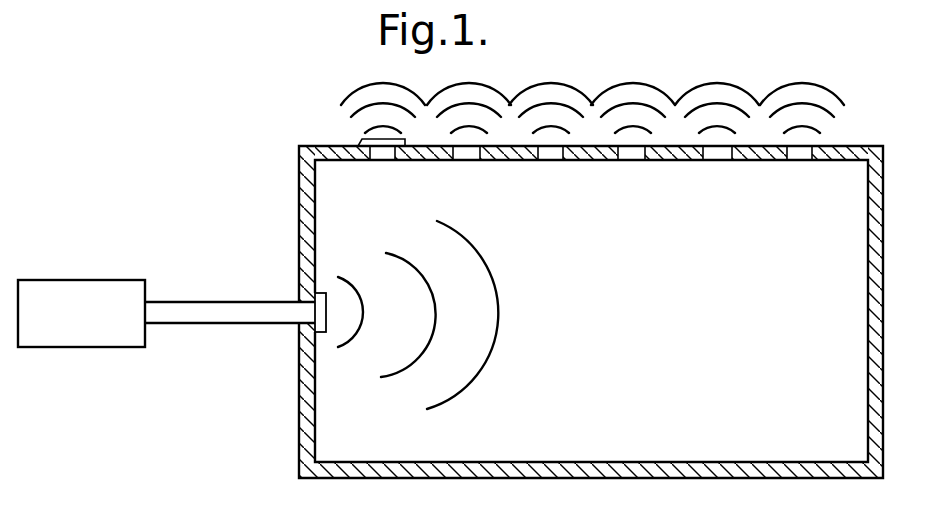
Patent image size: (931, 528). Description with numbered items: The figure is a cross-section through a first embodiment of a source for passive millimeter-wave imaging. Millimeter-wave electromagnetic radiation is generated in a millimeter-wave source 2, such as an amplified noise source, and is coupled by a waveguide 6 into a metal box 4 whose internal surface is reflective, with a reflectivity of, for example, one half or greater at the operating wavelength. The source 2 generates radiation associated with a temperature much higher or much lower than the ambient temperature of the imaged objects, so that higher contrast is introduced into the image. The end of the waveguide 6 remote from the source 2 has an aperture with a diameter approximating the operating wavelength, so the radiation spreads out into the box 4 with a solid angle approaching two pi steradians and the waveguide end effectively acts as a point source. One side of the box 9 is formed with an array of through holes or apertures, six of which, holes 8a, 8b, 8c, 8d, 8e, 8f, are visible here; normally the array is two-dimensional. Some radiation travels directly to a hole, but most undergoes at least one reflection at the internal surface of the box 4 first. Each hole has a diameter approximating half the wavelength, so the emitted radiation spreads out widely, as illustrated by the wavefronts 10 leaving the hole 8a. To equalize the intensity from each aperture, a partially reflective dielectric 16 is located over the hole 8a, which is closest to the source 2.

The millimeter-wave source 2 is at (52, 287).
The metal box 4 is at (292, 182).
The waveguide 6 is at (200, 324).
The hole 8a is at (383, 160).
The hole 8b is at (466, 160).
The hole 8c is at (551, 160).
The hole 8d is at (632, 160).
The hole 8e is at (717, 160).
The hole 8f is at (800, 160).
The side of the box 9 is at (590, 160).
The wavefronts 10 is at (372, 112).
The dielectric 16 is at (366, 140).